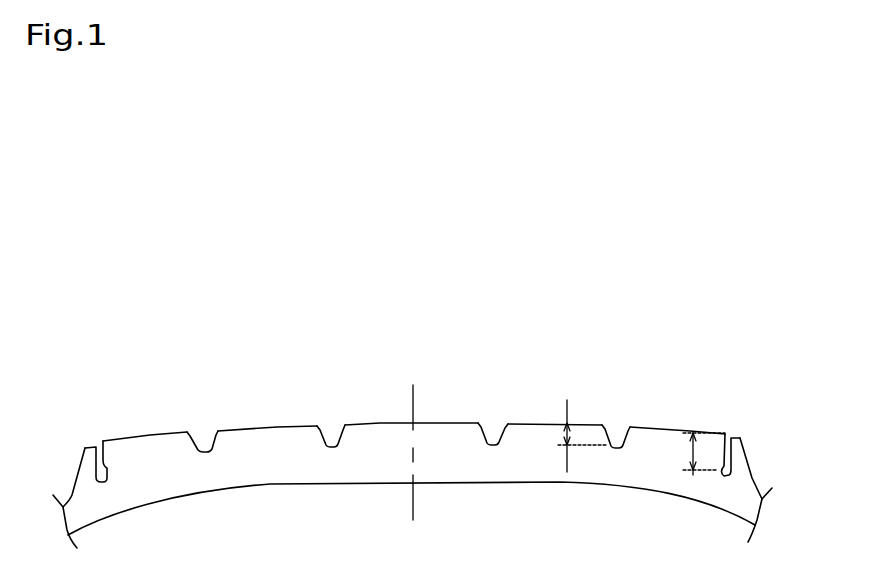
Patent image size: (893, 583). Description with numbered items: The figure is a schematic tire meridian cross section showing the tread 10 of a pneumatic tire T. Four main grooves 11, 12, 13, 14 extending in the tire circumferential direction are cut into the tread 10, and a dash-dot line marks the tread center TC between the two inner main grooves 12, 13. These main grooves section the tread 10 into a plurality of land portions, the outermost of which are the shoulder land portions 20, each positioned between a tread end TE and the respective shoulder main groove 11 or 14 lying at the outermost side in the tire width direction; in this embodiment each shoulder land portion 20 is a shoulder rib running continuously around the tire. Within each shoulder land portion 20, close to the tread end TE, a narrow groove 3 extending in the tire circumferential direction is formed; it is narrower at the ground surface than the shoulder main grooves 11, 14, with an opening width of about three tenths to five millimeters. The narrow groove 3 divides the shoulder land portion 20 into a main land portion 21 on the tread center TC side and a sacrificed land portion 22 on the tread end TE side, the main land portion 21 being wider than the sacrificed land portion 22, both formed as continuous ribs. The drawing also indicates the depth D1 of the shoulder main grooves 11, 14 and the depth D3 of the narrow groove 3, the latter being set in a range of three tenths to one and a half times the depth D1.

The narrow groove 3 is at (110, 483).
The tread 10 is at (277, 427).
The shoulder main groove 11 is at (211, 432).
The main groove 12 is at (341, 437).
The main groove 13 is at (500, 430).
The shoulder main groove 14 is at (625, 442).
The shoulder land portion 20 is at (197, 338).
The main land portion 21 is at (168, 430).
The sacrificed land portion 22 is at (90, 447).
The pneumatic tire T is at (450, 343).
The tread center TC is at (412, 440).
The tread end TE is at (85, 448).
The depth of the shoulder main grooves D1 is at (579, 419).
The depth of the narrow groove D3 is at (691, 454).